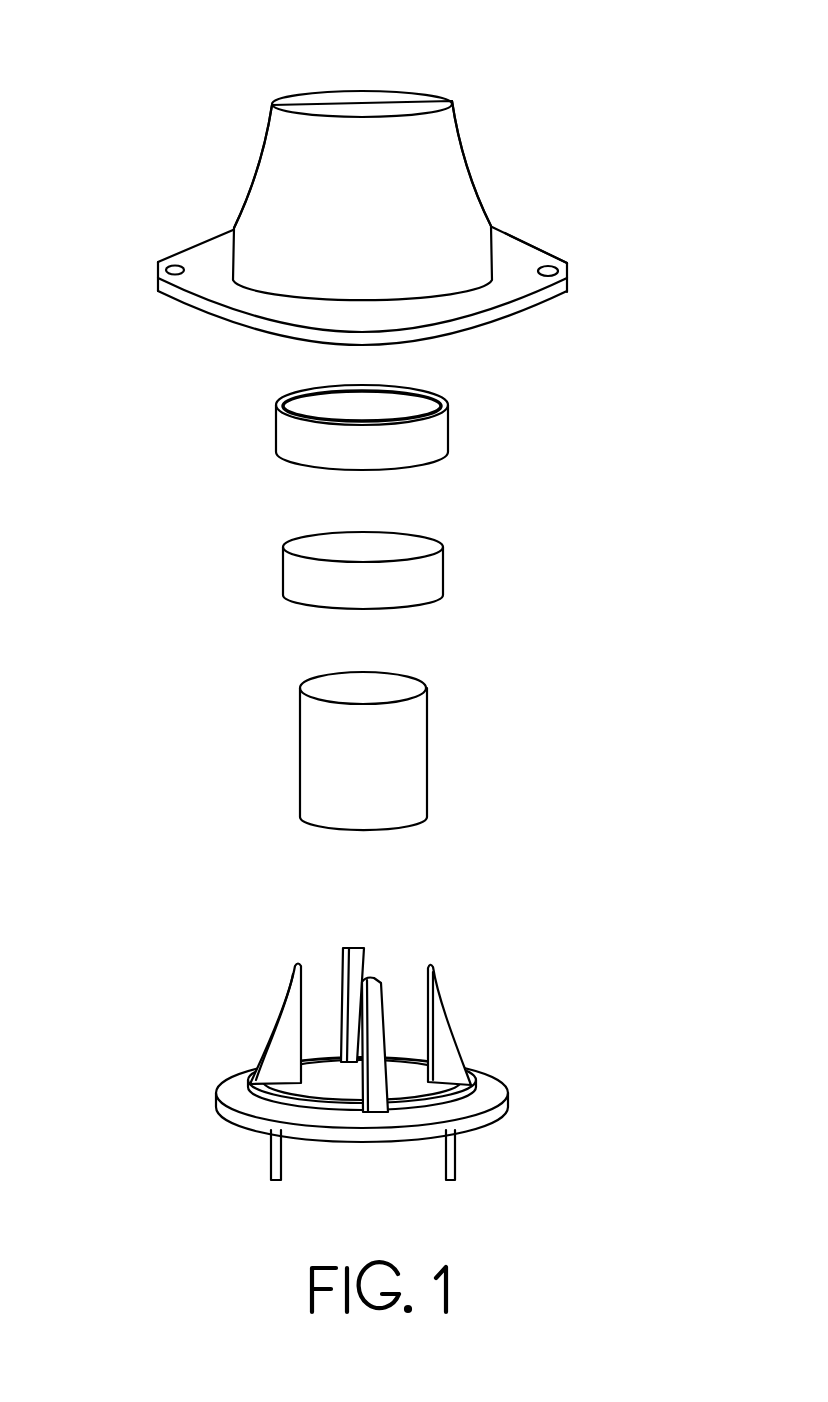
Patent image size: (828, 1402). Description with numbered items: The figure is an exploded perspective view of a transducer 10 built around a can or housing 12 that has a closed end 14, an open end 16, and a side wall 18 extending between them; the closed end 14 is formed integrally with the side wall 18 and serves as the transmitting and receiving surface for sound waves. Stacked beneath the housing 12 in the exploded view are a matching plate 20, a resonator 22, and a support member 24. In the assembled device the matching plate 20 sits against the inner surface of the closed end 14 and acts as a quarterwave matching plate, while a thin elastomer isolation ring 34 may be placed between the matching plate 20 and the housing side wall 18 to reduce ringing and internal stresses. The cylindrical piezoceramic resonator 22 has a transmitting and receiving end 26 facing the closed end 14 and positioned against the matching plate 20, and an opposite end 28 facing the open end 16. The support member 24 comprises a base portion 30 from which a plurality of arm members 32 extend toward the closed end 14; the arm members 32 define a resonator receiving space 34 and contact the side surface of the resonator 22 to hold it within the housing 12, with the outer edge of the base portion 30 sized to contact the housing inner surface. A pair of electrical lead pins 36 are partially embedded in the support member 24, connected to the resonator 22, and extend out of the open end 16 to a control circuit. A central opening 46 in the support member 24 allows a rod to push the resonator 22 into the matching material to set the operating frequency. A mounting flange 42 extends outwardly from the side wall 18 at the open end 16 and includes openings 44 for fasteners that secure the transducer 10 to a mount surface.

The transducer 10 is at (573, 188).
The housing 12 is at (463, 130).
The closed end 14 is at (290, 102).
The open end 16 is at (235, 333).
The side wall 18 is at (266, 190).
The matching plate 20 is at (443, 565).
The resonator 22 is at (430, 755).
The support member 24 is at (470, 1057).
The transmitting and receiving end 26 is at (316, 690).
The opposite end 28 is at (312, 830).
The base portion 30 is at (490, 1100).
The arm members 32 is at (288, 1038).
The isolation ring 34 is at (448, 422).
The electrical lead pins 36 is at (275, 1162).
The mounting flange 42 is at (525, 238).
The openings 44 is at (158, 262).
The central opening 46 is at (336, 1078).